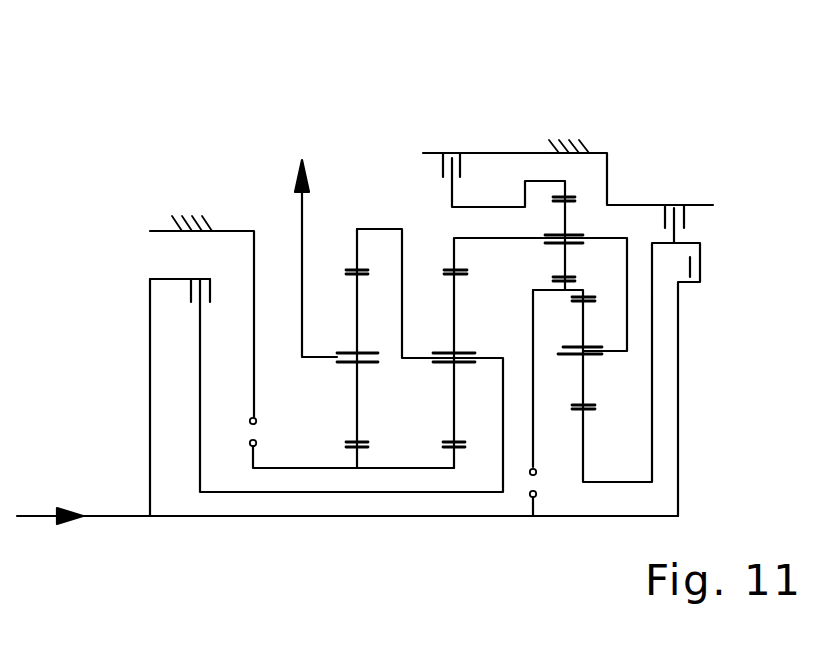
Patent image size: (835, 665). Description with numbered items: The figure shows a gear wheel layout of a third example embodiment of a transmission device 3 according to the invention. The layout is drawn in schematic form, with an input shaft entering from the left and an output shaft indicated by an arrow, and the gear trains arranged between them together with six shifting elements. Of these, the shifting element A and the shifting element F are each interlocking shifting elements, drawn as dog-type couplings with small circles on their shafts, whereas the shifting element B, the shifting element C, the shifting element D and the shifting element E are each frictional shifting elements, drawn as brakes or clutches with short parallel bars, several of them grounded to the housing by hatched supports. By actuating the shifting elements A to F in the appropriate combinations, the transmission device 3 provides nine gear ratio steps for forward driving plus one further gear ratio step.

The transmission device 3 is at (133, 200).
The shifting element E is at (200, 287).
The shifting element D is at (450, 153).
The shifting element C is at (672, 208).
The shifting element B is at (700, 275).
The shifting element F is at (254, 445).
The shifting element A is at (531, 496).